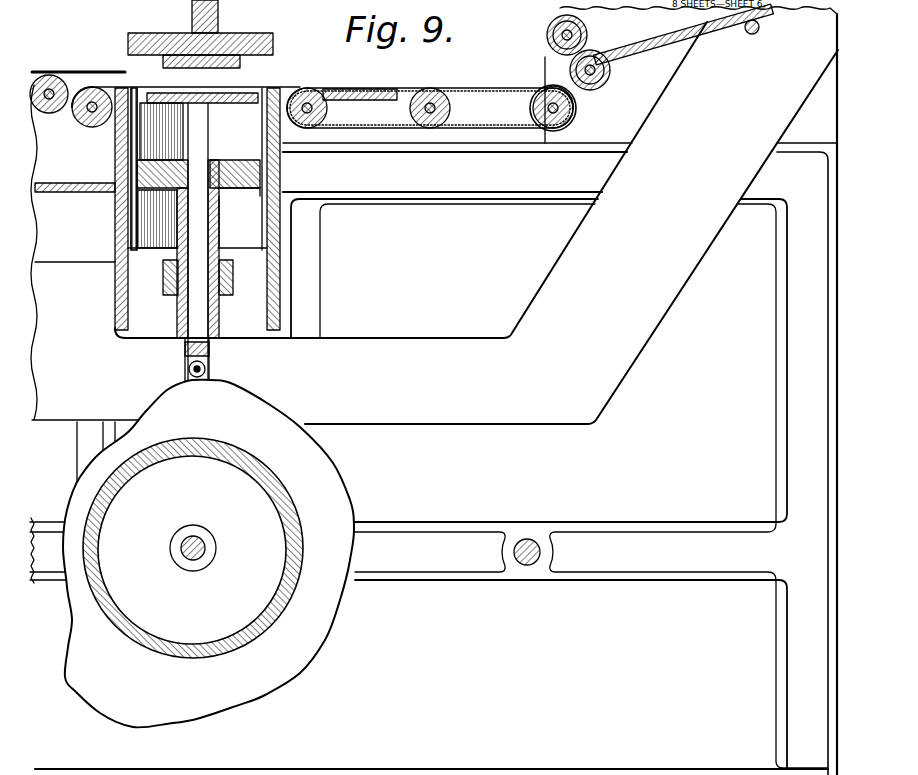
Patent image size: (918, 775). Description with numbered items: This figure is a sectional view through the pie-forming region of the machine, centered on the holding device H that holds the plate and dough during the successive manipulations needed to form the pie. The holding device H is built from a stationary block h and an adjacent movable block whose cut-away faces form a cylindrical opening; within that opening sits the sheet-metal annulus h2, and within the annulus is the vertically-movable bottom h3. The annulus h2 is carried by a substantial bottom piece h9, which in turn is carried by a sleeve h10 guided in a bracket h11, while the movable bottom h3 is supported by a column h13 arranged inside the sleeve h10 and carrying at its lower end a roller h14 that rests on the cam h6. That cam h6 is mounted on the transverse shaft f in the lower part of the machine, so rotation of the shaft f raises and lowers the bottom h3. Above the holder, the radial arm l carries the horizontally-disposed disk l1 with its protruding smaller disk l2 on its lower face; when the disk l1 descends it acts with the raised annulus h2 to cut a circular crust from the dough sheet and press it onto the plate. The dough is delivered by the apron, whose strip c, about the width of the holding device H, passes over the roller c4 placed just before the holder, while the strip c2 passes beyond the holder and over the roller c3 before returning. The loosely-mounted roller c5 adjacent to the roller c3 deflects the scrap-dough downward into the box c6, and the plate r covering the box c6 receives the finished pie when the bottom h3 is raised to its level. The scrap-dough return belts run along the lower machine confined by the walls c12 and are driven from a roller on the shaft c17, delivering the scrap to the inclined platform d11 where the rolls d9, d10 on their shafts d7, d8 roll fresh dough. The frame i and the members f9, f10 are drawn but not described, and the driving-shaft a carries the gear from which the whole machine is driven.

The radial arm l is at (191, 4).
The horizontally-disposed disk l1 is at (128, 38).
The protruding smaller disk l2 is at (240, 64).
The plate r is at (74, 72).
The loosely-mounted roller c5 is at (50, 113).
The roller c3 is at (94, 128).
The apron strip c2 is at (90, 128).
The holding device H is at (197, 209).
The vertically-movable bottom h3 is at (172, 97).
The stationary block h is at (143, 223).
The sheet-metal annulus h2 is at (138, 157).
The column h13 is at (198, 305).
The bracket h11 is at (246, 270).
The bottom piece h9 is at (229, 194).
The sleeve h10 is at (218, 232).
The roller h14 is at (207, 372).
The box c6 is at (73, 193).
The cam h6 is at (325, 468).
The shaft f is at (207, 553).
The apron strip c is at (395, 127).
The roller c4 is at (328, 113).
The pulley f10 is at (537, 108).
The belt f9 is at (543, 88).
The shaft d8 is at (547, 37).
The roll d10 is at (557, 23).
The shaft d7 is at (606, 67).
The roll d9 is at (602, 84).
The inclined platform d11 is at (650, 44).
The shaft c17 is at (753, 34).
The frame i is at (477, 190).
The walls c12 is at (430, 352).
The driving-shaft a is at (520, 562).